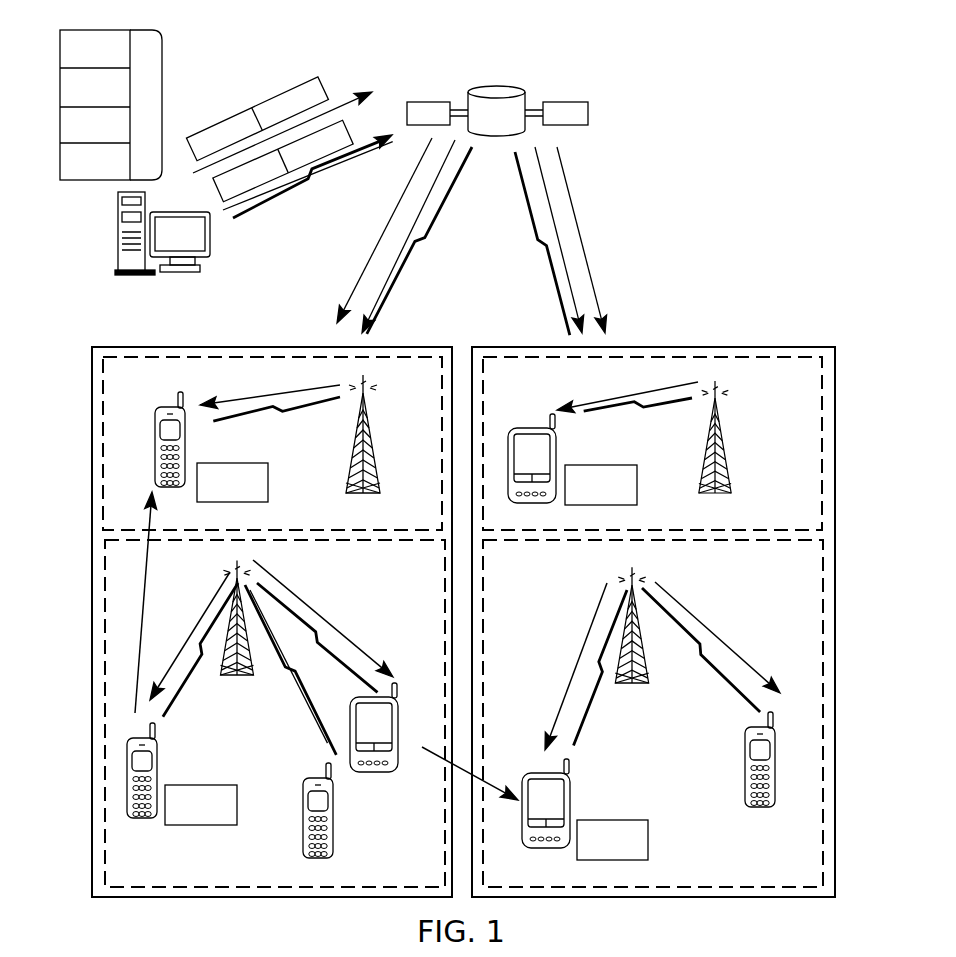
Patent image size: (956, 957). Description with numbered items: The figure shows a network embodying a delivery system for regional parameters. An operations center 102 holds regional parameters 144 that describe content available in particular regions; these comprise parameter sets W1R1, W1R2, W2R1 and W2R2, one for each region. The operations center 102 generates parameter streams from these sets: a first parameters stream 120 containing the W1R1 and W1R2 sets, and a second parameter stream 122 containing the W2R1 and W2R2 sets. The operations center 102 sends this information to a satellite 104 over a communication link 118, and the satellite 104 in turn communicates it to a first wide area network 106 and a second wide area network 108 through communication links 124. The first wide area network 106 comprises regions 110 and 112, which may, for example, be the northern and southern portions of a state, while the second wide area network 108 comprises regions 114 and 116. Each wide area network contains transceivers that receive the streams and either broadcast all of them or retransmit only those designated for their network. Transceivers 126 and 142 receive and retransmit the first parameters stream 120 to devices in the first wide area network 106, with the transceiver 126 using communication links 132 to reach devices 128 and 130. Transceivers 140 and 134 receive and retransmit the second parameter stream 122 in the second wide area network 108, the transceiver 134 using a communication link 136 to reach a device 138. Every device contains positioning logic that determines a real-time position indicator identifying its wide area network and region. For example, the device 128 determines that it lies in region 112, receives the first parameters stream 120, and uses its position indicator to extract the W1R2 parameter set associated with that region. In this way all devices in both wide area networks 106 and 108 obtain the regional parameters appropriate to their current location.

The operations center 102 is at (118, 200).
The satellite 104 is at (500, 88).
The first wide area network 106 is at (162, 346).
The second wide area network 108 is at (743, 346).
The region 110 is at (103, 427).
The region 112 is at (105, 611).
The region 114 is at (822, 449).
The region 116 is at (823, 621).
The communication link 118 is at (280, 193).
The first parameters stream 120 is at (353, 87).
The second parameter stream 122 is at (373, 128).
The communication links 124 is at (397, 303).
The transceiver 126 is at (245, 677).
The device 128 is at (173, 407).
The device 130 is at (368, 772).
The communication links 132 is at (307, 730).
The transceiver 134 is at (627, 685).
The communication link 136 is at (732, 683).
The device 138 is at (762, 810).
The transceiver 140 is at (718, 495).
The transceiver 142 is at (350, 495).
The regional parameters 144 is at (163, 80).